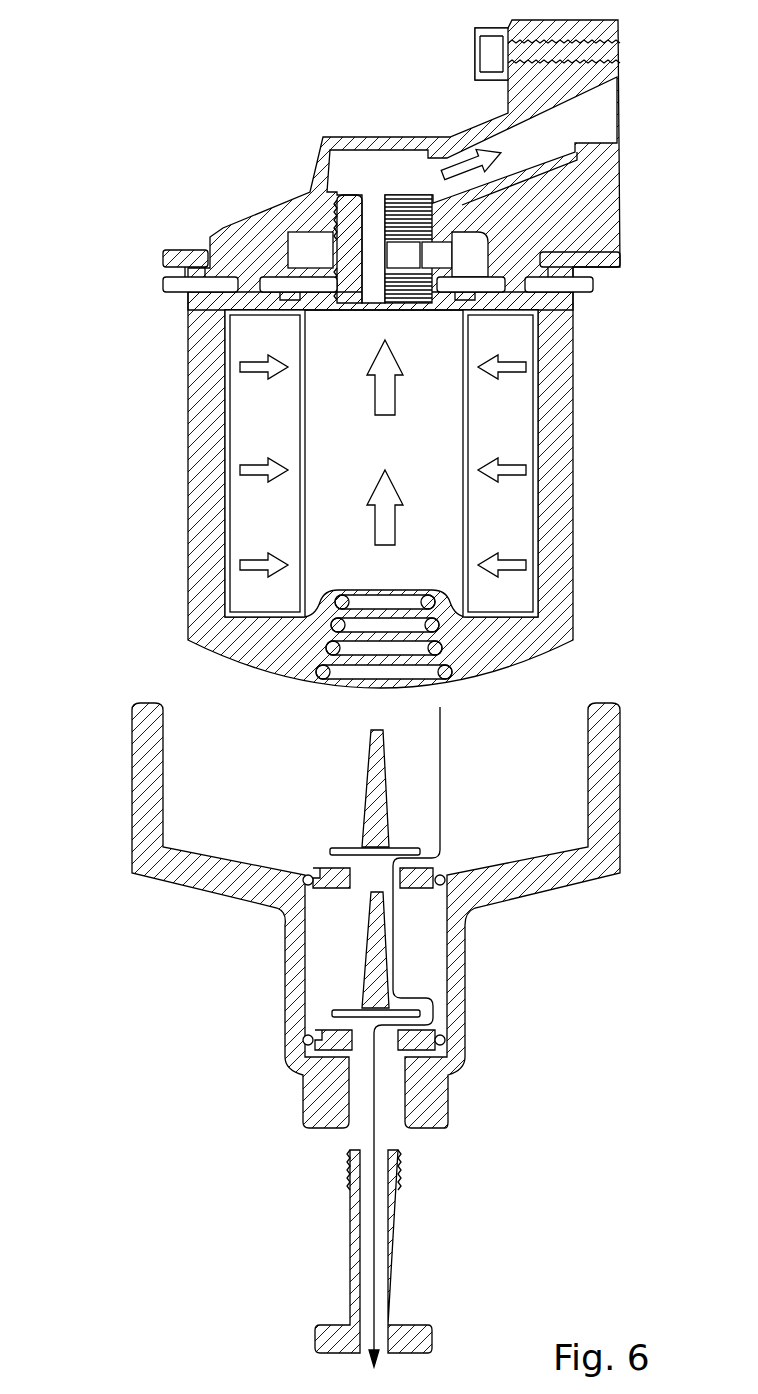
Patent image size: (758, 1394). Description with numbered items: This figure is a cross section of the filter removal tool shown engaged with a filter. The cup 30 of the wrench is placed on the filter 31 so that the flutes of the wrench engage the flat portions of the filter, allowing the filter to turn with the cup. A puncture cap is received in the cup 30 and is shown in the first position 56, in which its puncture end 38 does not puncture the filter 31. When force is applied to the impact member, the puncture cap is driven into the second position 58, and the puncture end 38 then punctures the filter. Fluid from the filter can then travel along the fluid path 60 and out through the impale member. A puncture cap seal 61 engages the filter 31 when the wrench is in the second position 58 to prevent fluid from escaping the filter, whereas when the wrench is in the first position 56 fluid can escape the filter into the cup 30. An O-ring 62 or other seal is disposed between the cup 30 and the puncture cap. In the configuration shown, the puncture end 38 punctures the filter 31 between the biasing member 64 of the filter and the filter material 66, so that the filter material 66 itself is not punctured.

The cup 30 is at (620, 785).
The filter 31 is at (573, 442).
The puncture end 38 is at (383, 760).
The first position 56 is at (356, 958).
The second position 58 is at (328, 832).
The fluid path 60 is at (442, 792).
The puncture cap seal 61 is at (350, 850).
The O-ring 62 is at (442, 877).
The biasing member 64 is at (445, 677).
The filter material 66 is at (503, 403).